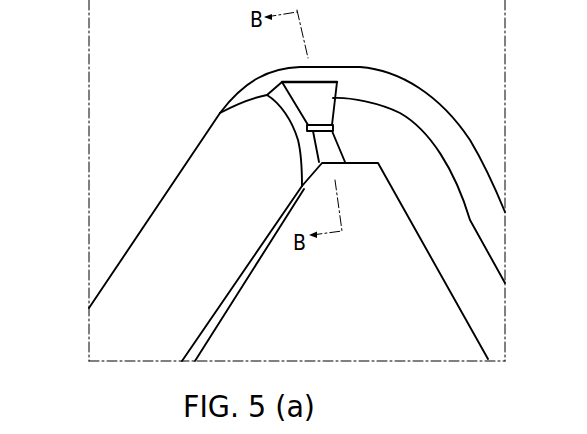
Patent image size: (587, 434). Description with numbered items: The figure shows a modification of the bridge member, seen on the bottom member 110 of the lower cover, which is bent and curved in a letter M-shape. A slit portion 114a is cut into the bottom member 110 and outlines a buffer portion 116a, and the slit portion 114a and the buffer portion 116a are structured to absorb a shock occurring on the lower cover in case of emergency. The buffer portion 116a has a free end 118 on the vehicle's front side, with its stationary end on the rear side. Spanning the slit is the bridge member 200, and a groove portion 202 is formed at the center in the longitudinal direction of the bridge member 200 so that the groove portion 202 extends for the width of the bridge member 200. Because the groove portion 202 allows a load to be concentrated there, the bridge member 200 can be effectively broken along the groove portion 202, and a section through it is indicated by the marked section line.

The bottom member 110 is at (128, 42).
The slit portion 114a is at (184, 160).
The buffer portion 116a is at (383, 338).
The free end 118 is at (230, 290).
The bridge member 200 is at (282, 69).
The groove portion 202 is at (334, 128).